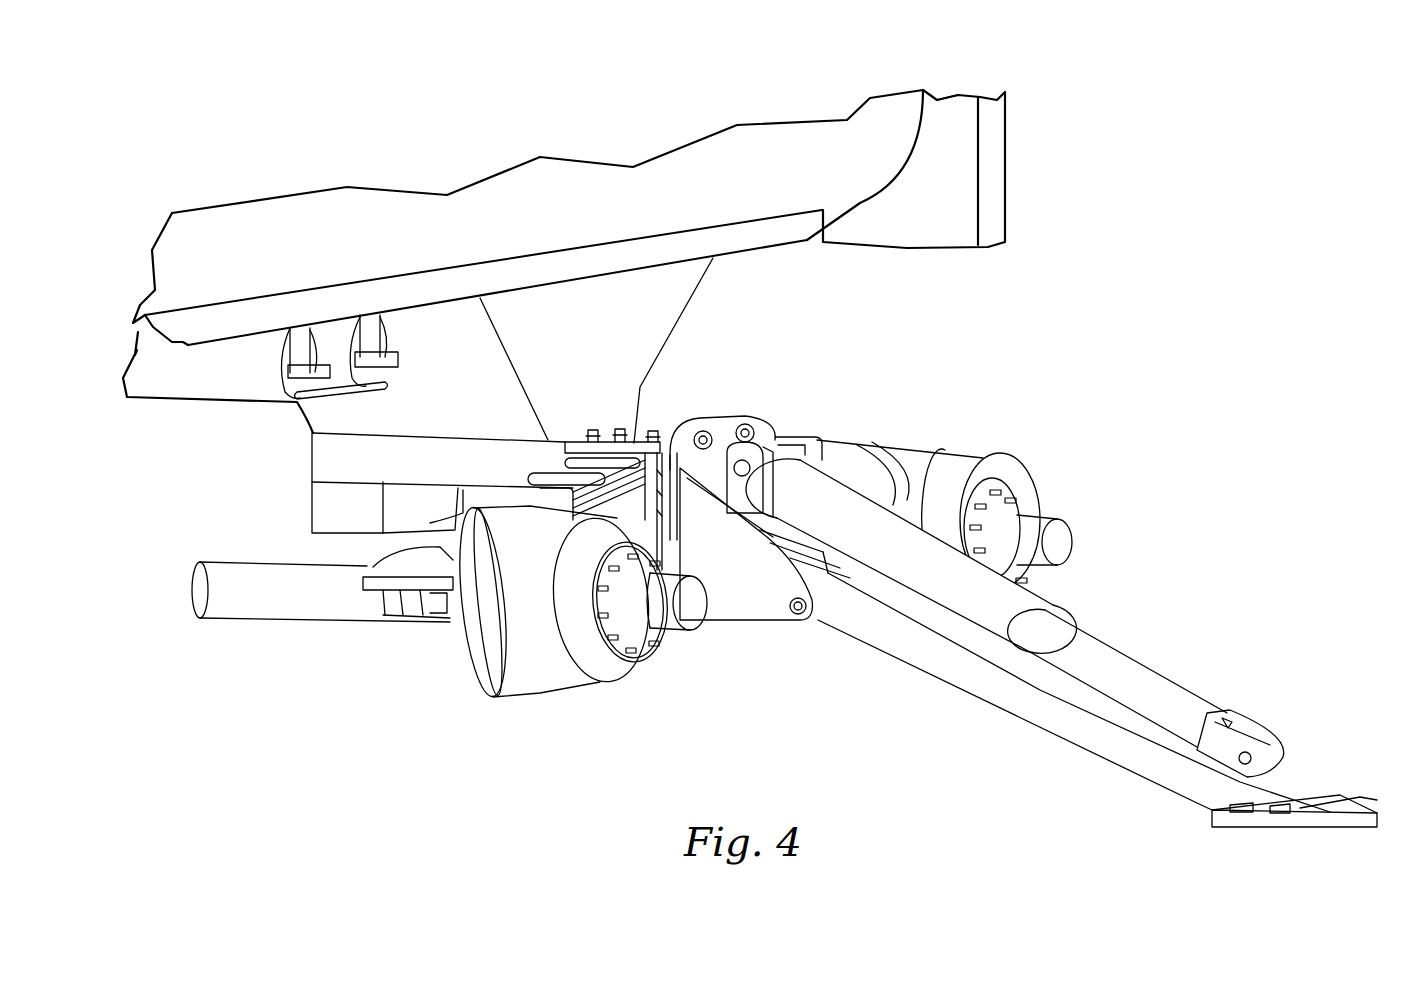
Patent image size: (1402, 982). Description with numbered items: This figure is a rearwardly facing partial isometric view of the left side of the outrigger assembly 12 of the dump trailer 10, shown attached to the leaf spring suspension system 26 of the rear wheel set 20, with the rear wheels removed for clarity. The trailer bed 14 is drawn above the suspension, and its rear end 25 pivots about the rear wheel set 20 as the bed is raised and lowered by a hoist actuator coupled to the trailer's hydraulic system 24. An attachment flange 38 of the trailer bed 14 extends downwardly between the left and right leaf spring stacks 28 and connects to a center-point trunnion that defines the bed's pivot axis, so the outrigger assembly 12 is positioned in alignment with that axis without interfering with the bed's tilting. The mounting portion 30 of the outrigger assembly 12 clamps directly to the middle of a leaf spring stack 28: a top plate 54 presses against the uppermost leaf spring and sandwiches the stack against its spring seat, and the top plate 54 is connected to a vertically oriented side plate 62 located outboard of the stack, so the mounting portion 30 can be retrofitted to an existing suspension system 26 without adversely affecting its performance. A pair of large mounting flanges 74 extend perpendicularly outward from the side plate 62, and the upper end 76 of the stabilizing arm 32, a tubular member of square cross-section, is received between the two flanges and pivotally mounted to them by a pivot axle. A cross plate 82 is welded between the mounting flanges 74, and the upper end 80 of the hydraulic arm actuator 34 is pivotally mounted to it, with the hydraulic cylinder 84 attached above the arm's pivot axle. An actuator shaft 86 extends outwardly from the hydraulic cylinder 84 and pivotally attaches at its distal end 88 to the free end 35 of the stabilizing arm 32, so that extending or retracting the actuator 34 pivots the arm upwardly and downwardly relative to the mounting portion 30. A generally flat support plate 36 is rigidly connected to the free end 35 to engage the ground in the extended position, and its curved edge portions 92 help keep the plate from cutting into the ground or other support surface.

The dump trailer 10 is at (203, 178).
The outrigger assembly 12 is at (760, 395).
The trailer bed 14 is at (283, 230).
The rear wheel set 20 is at (990, 470).
The hydraulic system 24 is at (343, 320).
The rear end 25 is at (948, 122).
The suspension system 26 is at (537, 465).
The leaf springs 28 is at (578, 440).
The mounting portion 30 is at (720, 407).
The stabilizing arm 32 is at (1015, 703).
The hydraulic arm actuator 34 is at (972, 625).
The free end 35 is at (1220, 797).
The support plate 36 is at (1245, 823).
The attachment flange 38 is at (427, 335).
The top plate 54 is at (632, 440).
The side plate 62 is at (760, 438).
The mounting flanges 74 is at (762, 603).
The upper end 76 is at (825, 613).
The upper end 80 is at (918, 475).
The cross plate 82 is at (777, 552).
The hydraulic cylinder 84 is at (892, 578).
The actuator shaft 86 is at (1157, 713).
The distal end 88 is at (1265, 728).
The curved edge portions 92 is at (1277, 820).